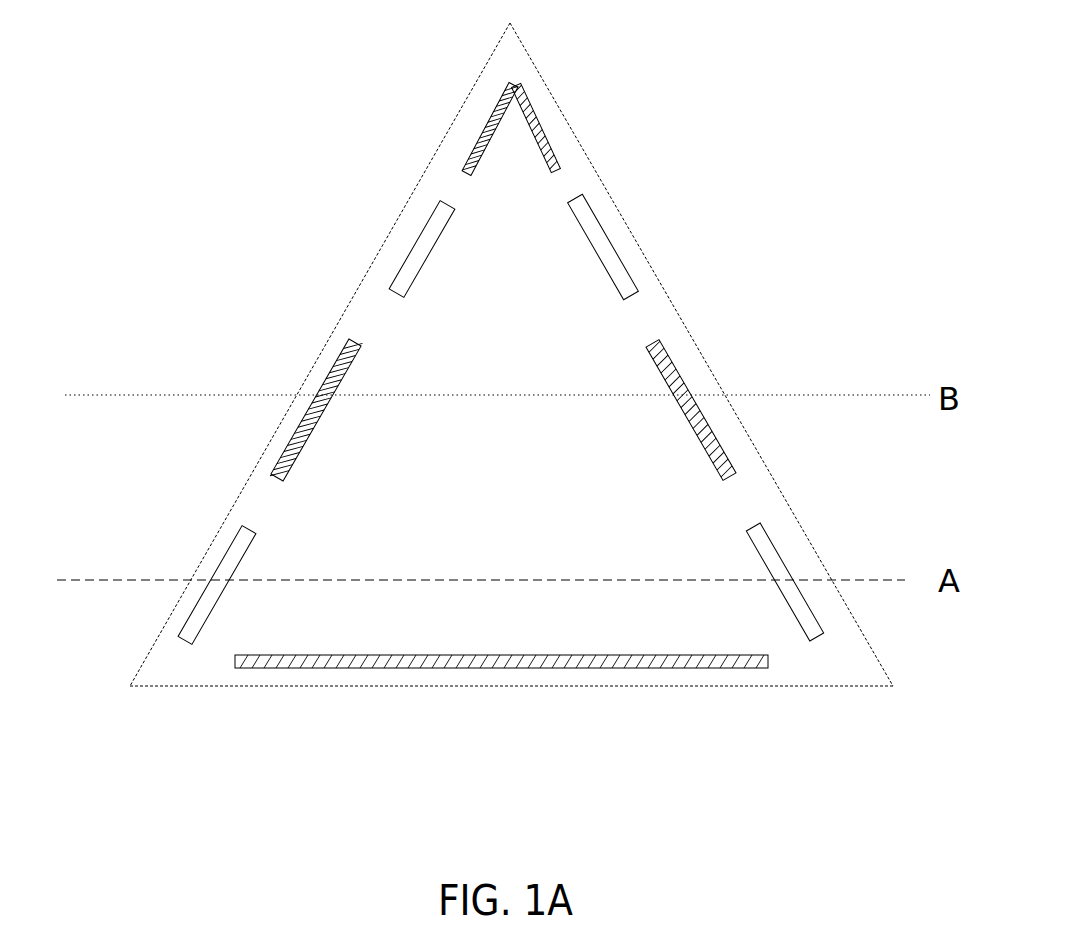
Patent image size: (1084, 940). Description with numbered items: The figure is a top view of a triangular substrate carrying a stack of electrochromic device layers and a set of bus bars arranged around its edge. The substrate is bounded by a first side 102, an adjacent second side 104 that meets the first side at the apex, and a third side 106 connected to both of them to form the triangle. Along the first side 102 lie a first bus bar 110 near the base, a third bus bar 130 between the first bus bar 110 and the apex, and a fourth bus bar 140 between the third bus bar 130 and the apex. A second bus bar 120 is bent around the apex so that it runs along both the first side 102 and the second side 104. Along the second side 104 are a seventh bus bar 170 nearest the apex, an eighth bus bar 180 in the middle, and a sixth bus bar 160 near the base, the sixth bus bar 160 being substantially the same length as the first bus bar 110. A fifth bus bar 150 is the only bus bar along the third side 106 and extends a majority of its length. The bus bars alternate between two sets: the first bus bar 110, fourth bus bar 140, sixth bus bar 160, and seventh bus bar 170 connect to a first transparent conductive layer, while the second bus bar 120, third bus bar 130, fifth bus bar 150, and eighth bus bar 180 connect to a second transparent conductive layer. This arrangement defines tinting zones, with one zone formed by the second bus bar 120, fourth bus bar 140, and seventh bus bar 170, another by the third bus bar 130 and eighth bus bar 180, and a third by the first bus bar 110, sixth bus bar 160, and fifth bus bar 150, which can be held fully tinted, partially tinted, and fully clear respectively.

The first side 102 is at (152, 640).
The second side 104 is at (858, 622).
The third side 106 is at (648, 686).
The first bus bar 110 is at (230, 543).
The second bus bar 120 is at (497, 103).
The third bus bar 130 is at (335, 362).
The fourth bus bar 140 is at (410, 250).
The fifth bus bar 150 is at (505, 668).
The sixth bus bar 160 is at (762, 537).
The seventh bus bar 170 is at (608, 238).
The eighth bus bar 180 is at (673, 363).